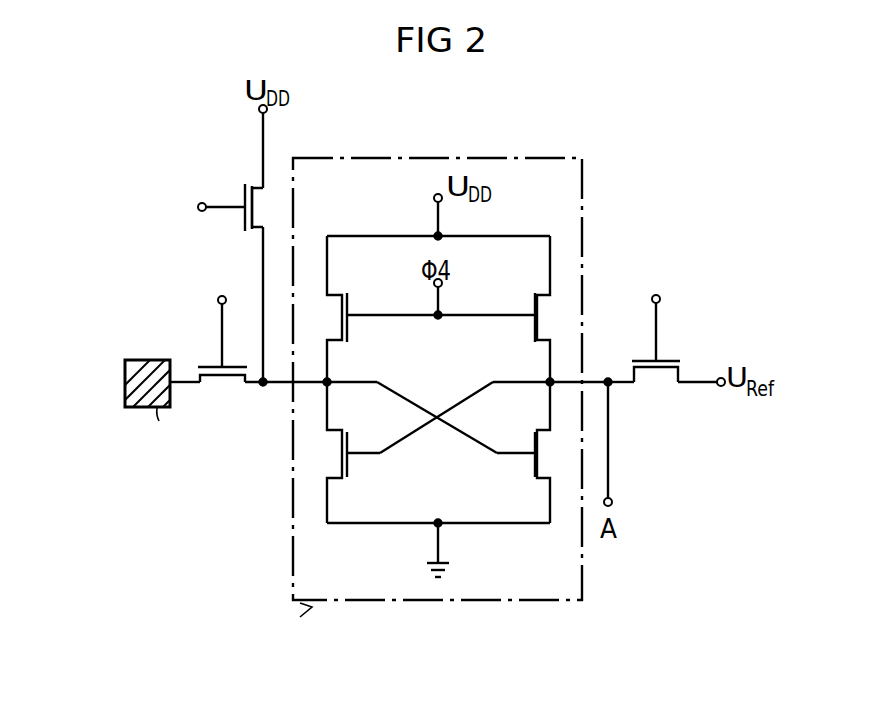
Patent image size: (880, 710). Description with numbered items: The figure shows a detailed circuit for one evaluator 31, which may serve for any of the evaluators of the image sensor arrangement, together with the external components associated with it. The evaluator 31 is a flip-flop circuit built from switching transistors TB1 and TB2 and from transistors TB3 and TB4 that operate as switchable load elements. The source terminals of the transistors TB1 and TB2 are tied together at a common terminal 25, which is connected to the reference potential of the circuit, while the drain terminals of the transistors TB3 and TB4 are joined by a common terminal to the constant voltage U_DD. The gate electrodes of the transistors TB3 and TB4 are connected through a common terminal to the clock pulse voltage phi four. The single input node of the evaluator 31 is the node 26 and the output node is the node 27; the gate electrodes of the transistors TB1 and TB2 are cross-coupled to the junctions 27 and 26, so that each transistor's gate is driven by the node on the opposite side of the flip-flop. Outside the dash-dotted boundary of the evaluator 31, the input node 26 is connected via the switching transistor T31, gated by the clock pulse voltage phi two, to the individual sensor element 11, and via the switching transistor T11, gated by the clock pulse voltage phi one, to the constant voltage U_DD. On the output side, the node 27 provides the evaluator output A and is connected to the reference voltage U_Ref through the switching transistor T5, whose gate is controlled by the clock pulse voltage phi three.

The sensor element 11 is at (132, 363).
The common terminal 25 is at (438, 536).
The input node 26 is at (351, 370).
The output node 27 is at (550, 370).
The evaluator 31 is at (536, 601).
The switching transistor T11 is at (215, 195).
The switching transistor T31 is at (222, 343).
The switching transistor T5 is at (656, 342).
The switching transistor TB1 is at (358, 452).
The switching transistor TB2 is at (522, 452).
The load transistor TB3 is at (382, 309).
The load transistor TB4 is at (494, 309).